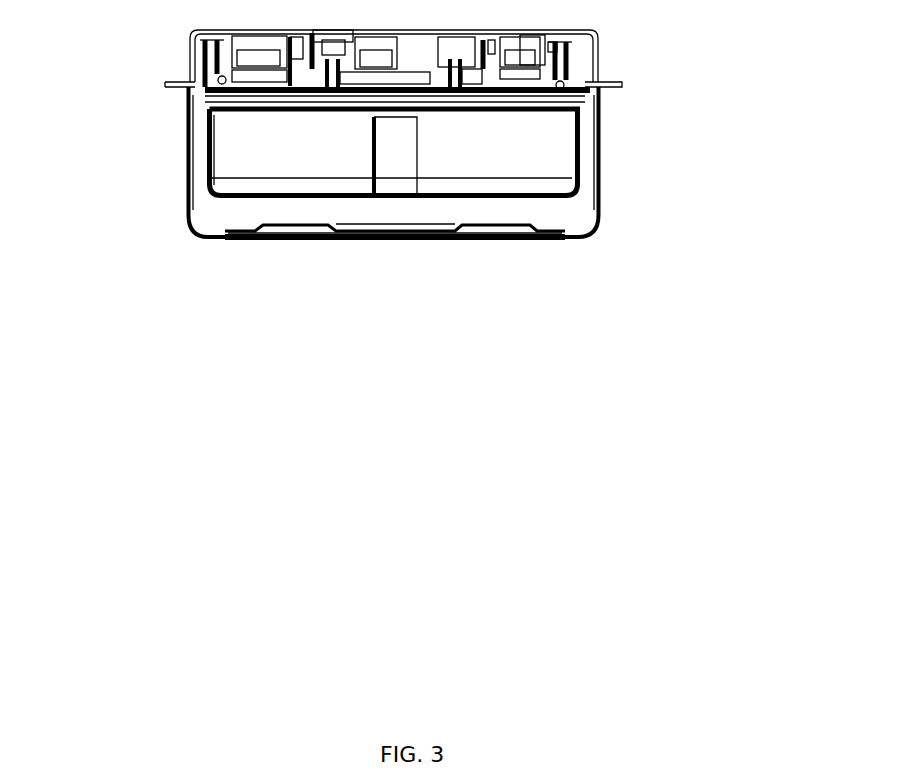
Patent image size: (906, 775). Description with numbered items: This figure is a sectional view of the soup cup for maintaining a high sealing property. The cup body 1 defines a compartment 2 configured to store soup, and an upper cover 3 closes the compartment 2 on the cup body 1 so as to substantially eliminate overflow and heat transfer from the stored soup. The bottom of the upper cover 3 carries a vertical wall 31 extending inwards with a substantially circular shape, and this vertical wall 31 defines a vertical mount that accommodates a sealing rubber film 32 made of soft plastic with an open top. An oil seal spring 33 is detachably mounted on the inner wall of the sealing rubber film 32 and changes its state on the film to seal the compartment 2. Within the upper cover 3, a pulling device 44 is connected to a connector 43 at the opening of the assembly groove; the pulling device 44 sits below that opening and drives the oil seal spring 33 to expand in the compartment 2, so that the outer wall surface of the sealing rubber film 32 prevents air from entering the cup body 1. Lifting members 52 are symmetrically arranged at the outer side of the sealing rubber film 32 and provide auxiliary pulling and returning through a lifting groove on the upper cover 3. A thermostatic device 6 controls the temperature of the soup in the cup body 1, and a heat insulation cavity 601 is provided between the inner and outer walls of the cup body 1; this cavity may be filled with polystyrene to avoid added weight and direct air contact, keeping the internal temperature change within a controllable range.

The cup body 1 is at (603, 152).
The compartment 2 is at (530, 165).
The upper cover 3 is at (192, 42).
The vertical wall 31 is at (187, 98).
The sealing rubber film 32 is at (207, 177).
The oil seal spring 33 is at (213, 108).
The connector 43 is at (330, 100).
The pulling device 44 is at (282, 100).
The lifting member 52 is at (623, 90).
The thermostatic device 6 is at (373, 212).
The heat insulation cavity 601 is at (585, 200).